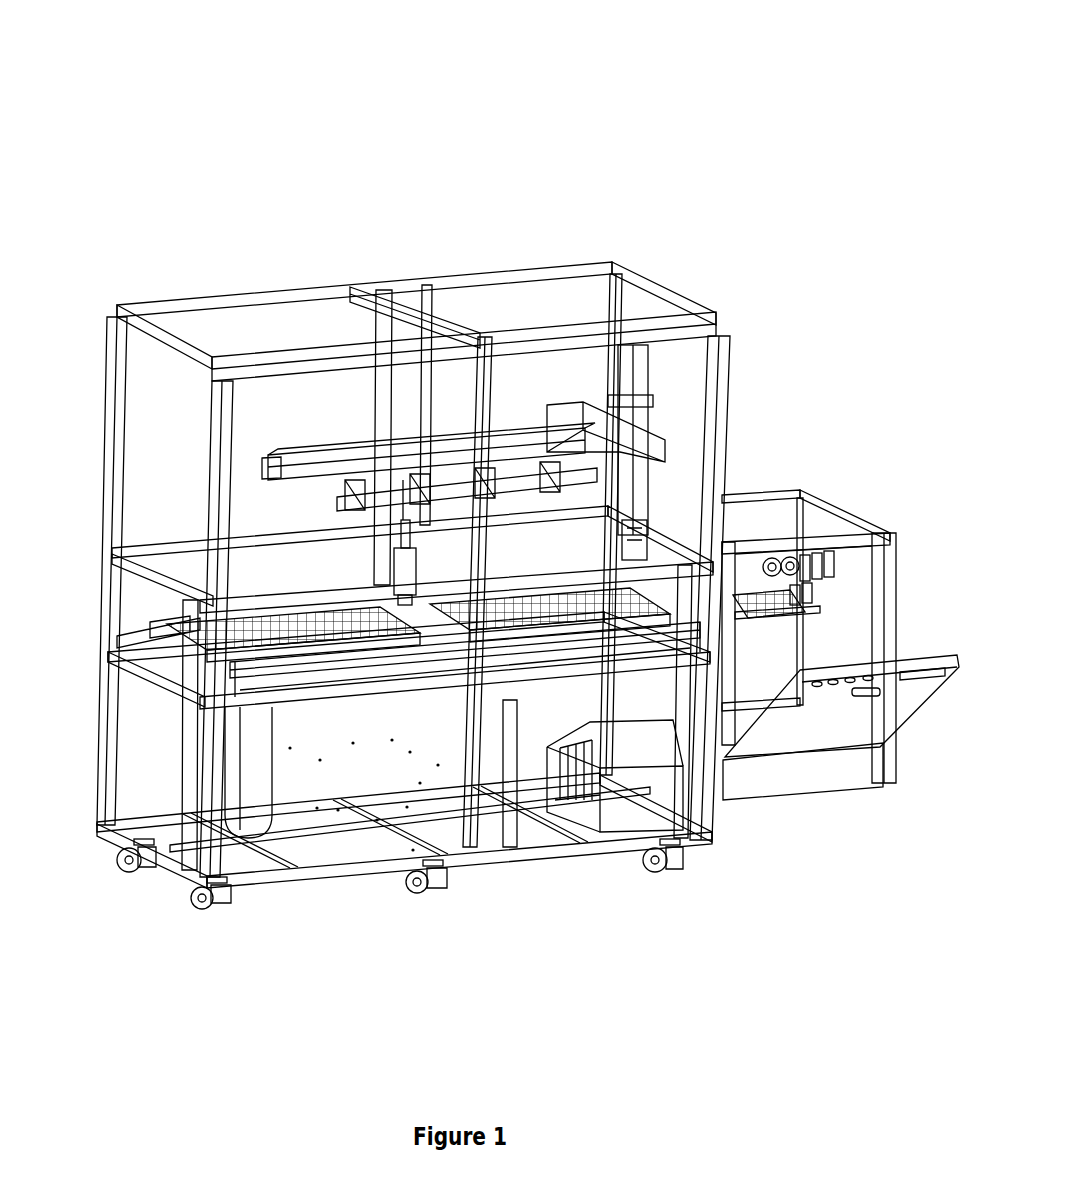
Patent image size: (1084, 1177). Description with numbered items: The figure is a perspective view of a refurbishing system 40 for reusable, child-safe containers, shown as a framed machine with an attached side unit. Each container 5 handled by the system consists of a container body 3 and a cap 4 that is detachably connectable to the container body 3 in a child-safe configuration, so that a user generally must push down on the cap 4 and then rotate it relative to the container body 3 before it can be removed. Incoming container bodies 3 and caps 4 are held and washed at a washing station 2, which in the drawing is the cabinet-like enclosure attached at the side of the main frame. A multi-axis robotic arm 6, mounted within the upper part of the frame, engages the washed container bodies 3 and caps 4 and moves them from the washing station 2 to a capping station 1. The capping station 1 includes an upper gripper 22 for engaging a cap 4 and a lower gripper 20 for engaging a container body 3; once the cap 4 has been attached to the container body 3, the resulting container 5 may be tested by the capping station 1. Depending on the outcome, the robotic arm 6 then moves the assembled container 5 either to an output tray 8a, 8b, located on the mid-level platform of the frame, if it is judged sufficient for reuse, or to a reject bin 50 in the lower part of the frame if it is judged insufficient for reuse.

The refurbishing system 40 is at (662, 132).
The upper gripper 22 is at (380, 560).
The multi-axis robotic arm 6 is at (650, 430).
The capping station 1 is at (337, 568).
The container 5 is at (233, 627).
The lower gripper 20 is at (482, 700).
The output tray 8b is at (232, 683).
The output tray 8a is at (703, 735).
The reject bin 50 is at (233, 830).
The washing station 2 is at (803, 773).
The container body 3 is at (825, 603).
The cap 4 is at (822, 553).